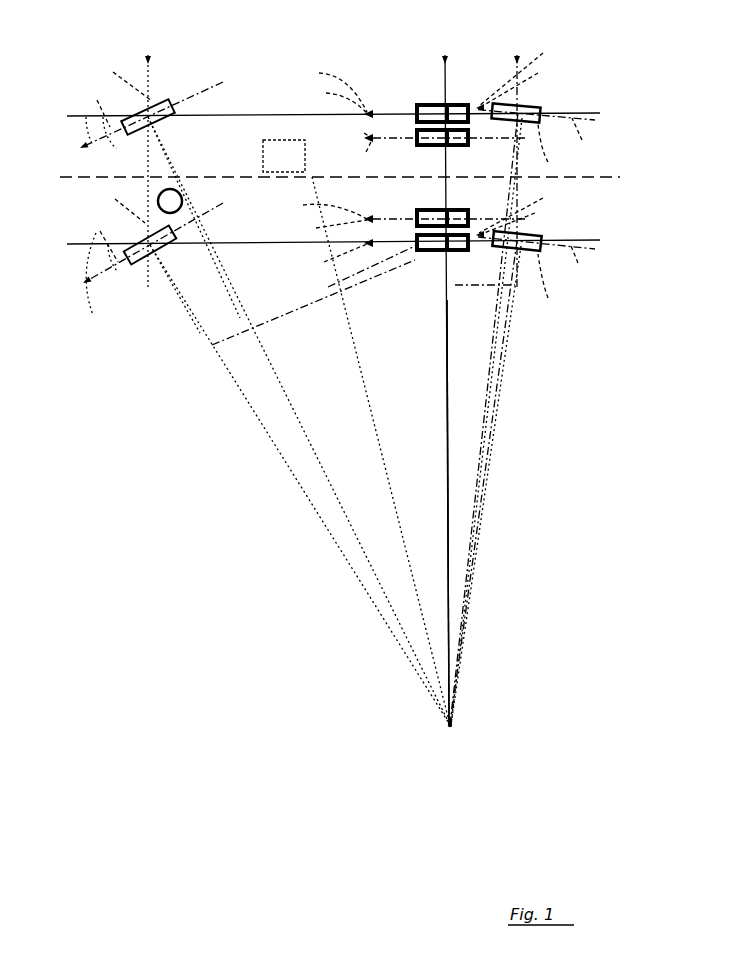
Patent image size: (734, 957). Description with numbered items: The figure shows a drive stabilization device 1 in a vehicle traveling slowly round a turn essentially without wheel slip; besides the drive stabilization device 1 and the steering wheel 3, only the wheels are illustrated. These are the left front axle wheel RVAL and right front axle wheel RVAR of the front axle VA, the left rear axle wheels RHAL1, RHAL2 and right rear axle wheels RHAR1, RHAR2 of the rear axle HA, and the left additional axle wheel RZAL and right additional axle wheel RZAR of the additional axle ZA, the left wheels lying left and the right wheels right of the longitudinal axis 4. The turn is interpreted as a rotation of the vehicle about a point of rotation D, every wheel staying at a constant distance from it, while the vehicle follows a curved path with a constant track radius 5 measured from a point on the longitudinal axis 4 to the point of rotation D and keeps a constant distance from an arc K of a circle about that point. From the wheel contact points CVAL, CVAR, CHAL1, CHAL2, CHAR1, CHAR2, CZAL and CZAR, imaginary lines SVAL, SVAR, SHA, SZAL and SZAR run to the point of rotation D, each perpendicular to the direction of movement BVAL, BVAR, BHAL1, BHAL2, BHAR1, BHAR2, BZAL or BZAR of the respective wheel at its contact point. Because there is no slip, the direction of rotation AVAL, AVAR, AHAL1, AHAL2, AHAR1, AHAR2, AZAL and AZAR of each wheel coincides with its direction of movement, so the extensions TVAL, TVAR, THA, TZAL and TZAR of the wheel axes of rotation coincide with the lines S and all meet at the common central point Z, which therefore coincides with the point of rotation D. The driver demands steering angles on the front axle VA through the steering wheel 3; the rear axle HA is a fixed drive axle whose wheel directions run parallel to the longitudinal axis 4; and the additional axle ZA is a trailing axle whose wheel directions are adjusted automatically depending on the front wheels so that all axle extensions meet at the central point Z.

The drive stabilization device 1 is at (290, 167).
The steering wheel 3 is at (180, 190).
The longitudinal axis 4 is at (600, 177).
The track radius 5 is at (381, 448).
The arc of a circle K is at (293, 310).
The common central point Z is at (452, 726).
The point of rotation D is at (447, 727).
The front axle VA is at (148, 159).
The rear axle HA is at (445, 377).
The additional axle ZA is at (518, 159).
The wheel contact point of right front axle wheel CVAR is at (156, 121).
The wheel contact point of left front axle wheel CVAL is at (160, 251).
The wheel contact point of right additional axle wheel CZAR is at (524, 103).
The wheel contact point of left additional axle wheel CZAL is at (527, 237).
The right rear axle wheel RHAR2 is at (427, 104).
The right rear axle wheel RHAR1 is at (437, 148).
The left rear axle wheel RHAL2 is at (430, 208).
The left rear axle wheel RHAL1 is at (433, 254).
The wheel contact point of right rear axle wheel RHAR2 CHAR2 is at (449, 103).
The wheel contact point of right rear axle wheel RHAR1 CHAR1 is at (452, 148).
The wheel contact point of left rear axle wheel RHAL2 CHAL2 is at (451, 209).
The wheel contact point of left rear axle wheel RHAL1 CHAL1 is at (427, 253).
The line between wheel contact point CVAR and point of rotation SVAR is at (280, 379).
The extension of the axis of rotation of right front axle wheel TVAR is at (299, 417).
The line between wheel contact point CVAL and point of rotation SVAL is at (250, 409).
The extension of the axis of rotation of left front axle wheel TVAL is at (279, 456).
The line between wheel contact point CZAR and point of rotation SZAR is at (507, 314).
The extension of the axis of rotation of right additional axle wheel TZAR is at (492, 365).
The line between wheel contact point CZAL and point of rotation SZAL is at (492, 432).
The extension of the axis of rotation of left additional axle wheel TZAL is at (487, 473).
The line between rear axle wheel contact points and point of rotation SHA is at (445, 344).
The extension of the axis of rotation of rear axle wheels THA is at (447, 373).
The direction of rotation of right front axle wheel AVAR is at (132, 129).
The direction of movement of right front axle wheel BVAR is at (83, 105).
The right front axle wheel RVAR is at (107, 81).
The direction of rotation of left front axle wheel AVAL is at (141, 275).
The direction of movement of left front axle wheel BVAL is at (88, 238).
The left front axle wheel RVAL is at (104, 206).
The direction of movement of right rear axle wheel RHAR2 BHAR2 is at (316, 89).
The direction of rotation of right rear axle wheel RHAR2 AHAR2 is at (317, 98).
The direction of movement of right rear axle wheel RHAR1 BHAR1 is at (417, 132).
The direction of rotation of right rear axle wheel RHAR1 AHAR1 is at (342, 152).
The direction of movement of left rear axle wheel RHAL2 BHAL2 is at (384, 209).
The direction of rotation of left rear axle wheel RHAL2 AHAL2 is at (311, 228).
The direction of movement of left rear axle wheel RHAL1 BHAL1 is at (317, 255).
The direction of rotation of left rear axle wheel RHAL1 AHAL1 is at (343, 271).
The direction of movement of right additional axle wheel BZAR is at (531, 76).
The longitudinal direction of right additional axle wheel AZAR is at (536, 91).
The right additional axle wheel RZAR is at (560, 151).
The direction of movement of left additional axle wheel BZAL is at (531, 212).
The longitudinal direction of left additional axle wheel AZAL is at (536, 226).
The left additional axle wheel RZAL is at (561, 285).